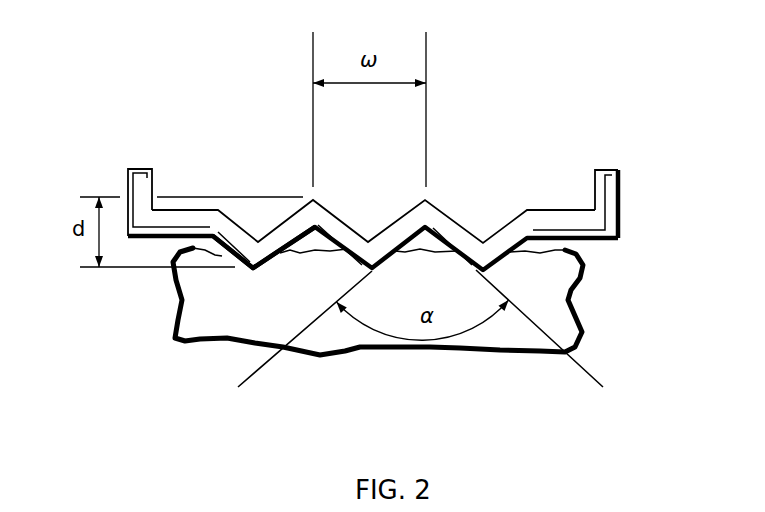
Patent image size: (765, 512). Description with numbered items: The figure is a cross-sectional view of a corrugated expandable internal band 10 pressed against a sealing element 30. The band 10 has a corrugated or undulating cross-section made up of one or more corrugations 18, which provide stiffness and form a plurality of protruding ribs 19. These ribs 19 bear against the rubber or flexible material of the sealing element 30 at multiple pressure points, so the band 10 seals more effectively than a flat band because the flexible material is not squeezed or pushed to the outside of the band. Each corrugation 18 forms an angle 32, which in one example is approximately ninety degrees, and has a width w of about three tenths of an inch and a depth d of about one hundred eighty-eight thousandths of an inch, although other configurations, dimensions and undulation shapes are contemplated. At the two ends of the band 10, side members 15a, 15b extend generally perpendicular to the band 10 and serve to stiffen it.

The expandable band 10 is at (384, 166).
The side member 15a is at (138, 180).
The side member 15b is at (603, 190).
The corrugation 18 is at (485, 213).
The rib 19 is at (262, 253).
The sealing element 30 is at (470, 353).
The angle 32 is at (367, 322).